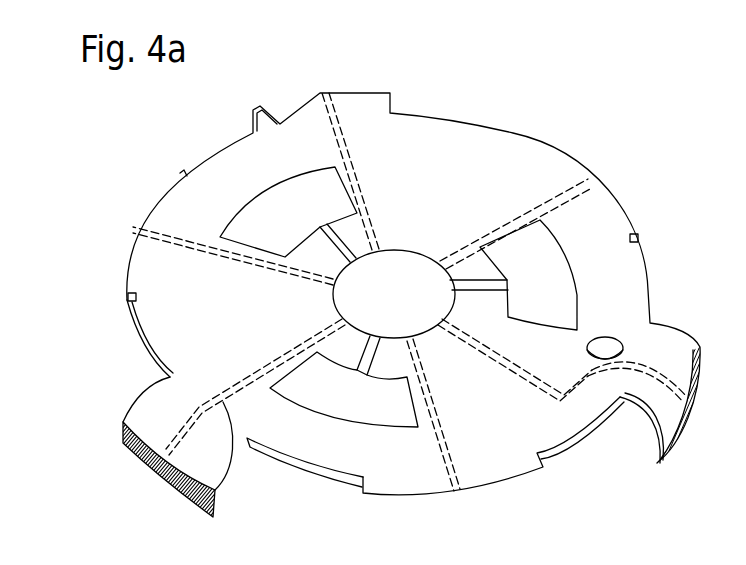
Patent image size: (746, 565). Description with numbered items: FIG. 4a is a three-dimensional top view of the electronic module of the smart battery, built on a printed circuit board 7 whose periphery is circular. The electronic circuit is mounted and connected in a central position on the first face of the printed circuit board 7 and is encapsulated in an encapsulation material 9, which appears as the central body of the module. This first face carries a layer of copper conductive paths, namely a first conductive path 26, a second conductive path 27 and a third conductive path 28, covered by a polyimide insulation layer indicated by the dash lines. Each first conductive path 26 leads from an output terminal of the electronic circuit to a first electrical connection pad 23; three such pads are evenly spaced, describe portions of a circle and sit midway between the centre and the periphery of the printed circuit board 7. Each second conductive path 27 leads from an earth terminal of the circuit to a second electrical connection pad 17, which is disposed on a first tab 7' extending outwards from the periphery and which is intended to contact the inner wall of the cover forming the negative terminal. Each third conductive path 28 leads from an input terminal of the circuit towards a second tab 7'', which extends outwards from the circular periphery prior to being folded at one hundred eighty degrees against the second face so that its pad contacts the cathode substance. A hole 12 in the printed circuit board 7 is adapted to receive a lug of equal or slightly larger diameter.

The printed circuit board 7 is at (436, 286).
The first tab 7' is at (152, 425).
The second tab 7'' is at (105, 303).
The encapsulation material 9 is at (381, 274).
The hole 12 is at (607, 355).
The second electrical connection pad 17 is at (172, 483).
The first electrical connection pad 23 is at (535, 248).
The first conductive path 26 is at (508, 298).
The second conductive path 27 is at (231, 447).
The third conductive path 28 is at (446, 466).